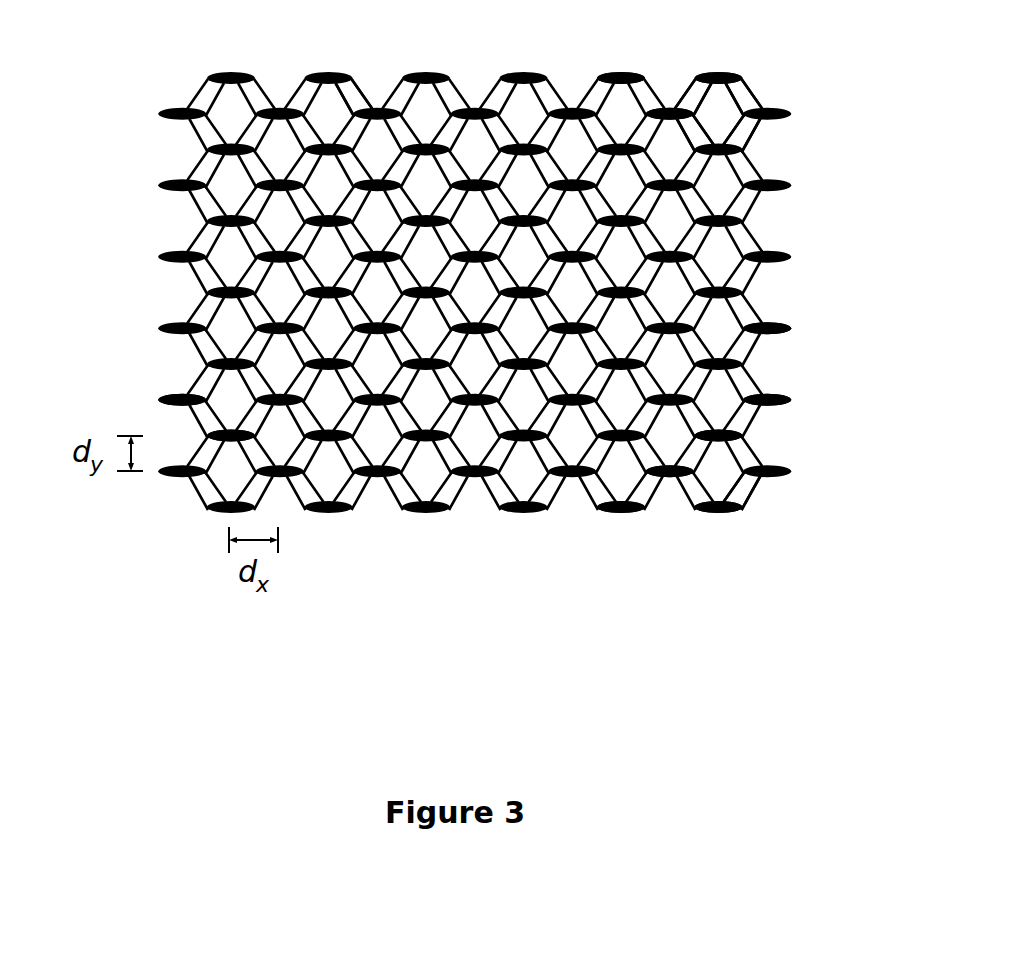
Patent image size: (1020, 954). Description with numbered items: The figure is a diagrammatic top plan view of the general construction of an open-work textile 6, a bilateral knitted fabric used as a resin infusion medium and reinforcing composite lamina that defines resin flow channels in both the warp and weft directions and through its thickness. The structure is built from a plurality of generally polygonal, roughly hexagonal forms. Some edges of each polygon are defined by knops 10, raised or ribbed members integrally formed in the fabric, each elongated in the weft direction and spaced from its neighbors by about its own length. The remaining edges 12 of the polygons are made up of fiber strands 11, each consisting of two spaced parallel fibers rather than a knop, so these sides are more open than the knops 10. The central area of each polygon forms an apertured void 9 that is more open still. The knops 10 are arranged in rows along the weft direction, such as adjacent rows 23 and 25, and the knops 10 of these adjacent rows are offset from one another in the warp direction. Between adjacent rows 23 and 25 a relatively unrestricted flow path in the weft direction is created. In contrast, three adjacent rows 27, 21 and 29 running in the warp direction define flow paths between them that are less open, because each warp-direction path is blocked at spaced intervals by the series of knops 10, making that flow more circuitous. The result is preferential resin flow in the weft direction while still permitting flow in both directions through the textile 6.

The open-work textile 6 is at (539, 292).
The apertured void 9 is at (718, 113).
The knop 10 is at (800, 327).
The fiber strand 11 is at (757, 497).
The remaining edge 12 is at (347, 99).
The warp-direction row 21 is at (670, 104).
The weft-direction row 23 is at (145, 398).
The weft-direction row 25 is at (192, 432).
The warp-direction row 27 is at (722, 63).
The warp-direction row 29 is at (618, 63).